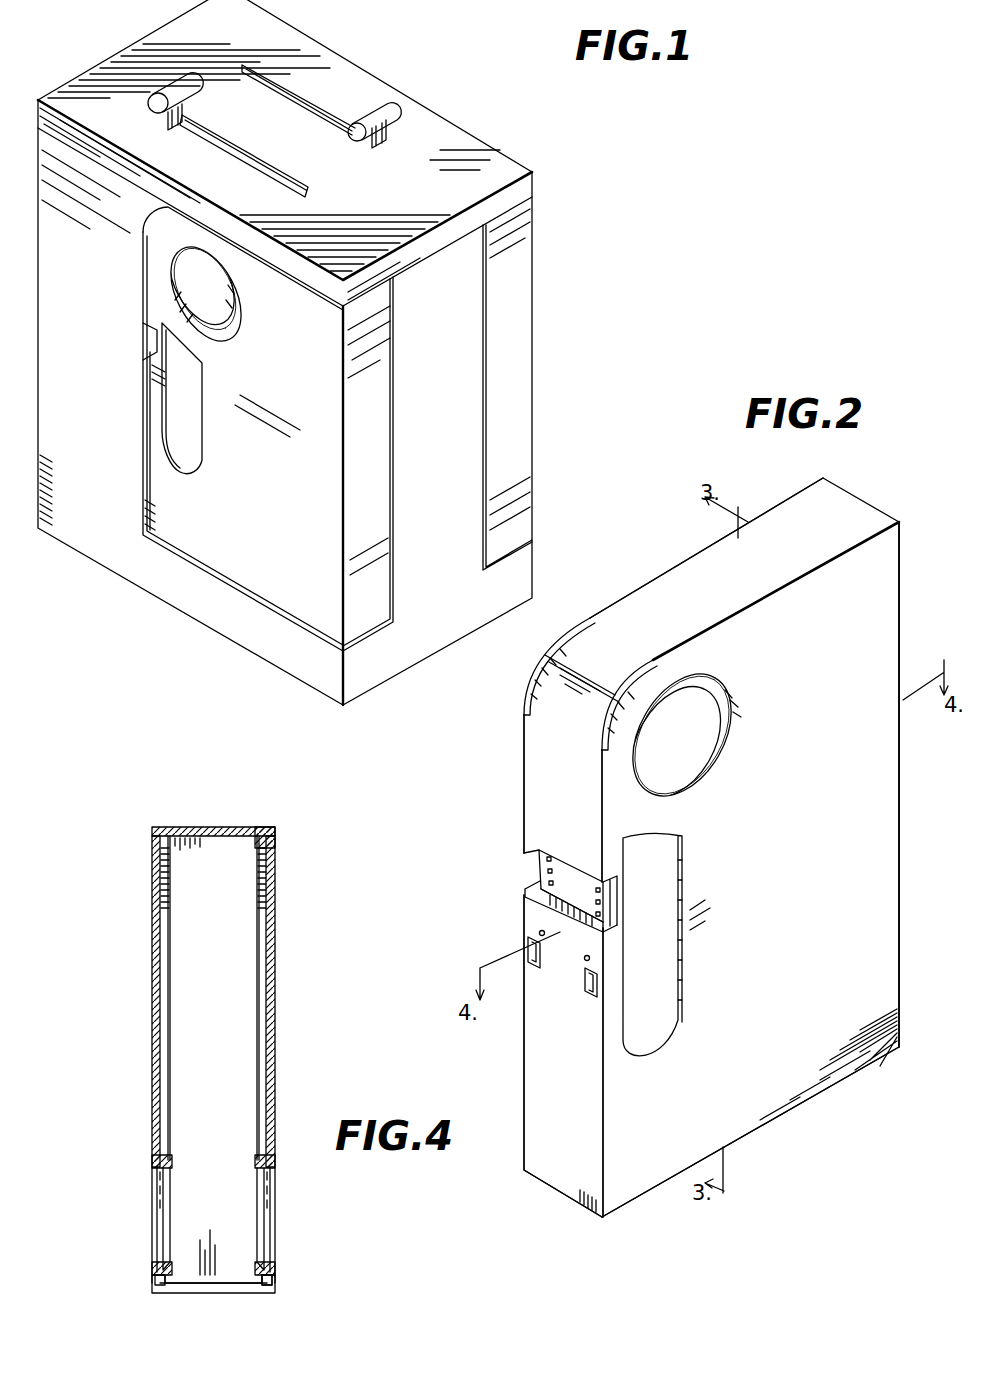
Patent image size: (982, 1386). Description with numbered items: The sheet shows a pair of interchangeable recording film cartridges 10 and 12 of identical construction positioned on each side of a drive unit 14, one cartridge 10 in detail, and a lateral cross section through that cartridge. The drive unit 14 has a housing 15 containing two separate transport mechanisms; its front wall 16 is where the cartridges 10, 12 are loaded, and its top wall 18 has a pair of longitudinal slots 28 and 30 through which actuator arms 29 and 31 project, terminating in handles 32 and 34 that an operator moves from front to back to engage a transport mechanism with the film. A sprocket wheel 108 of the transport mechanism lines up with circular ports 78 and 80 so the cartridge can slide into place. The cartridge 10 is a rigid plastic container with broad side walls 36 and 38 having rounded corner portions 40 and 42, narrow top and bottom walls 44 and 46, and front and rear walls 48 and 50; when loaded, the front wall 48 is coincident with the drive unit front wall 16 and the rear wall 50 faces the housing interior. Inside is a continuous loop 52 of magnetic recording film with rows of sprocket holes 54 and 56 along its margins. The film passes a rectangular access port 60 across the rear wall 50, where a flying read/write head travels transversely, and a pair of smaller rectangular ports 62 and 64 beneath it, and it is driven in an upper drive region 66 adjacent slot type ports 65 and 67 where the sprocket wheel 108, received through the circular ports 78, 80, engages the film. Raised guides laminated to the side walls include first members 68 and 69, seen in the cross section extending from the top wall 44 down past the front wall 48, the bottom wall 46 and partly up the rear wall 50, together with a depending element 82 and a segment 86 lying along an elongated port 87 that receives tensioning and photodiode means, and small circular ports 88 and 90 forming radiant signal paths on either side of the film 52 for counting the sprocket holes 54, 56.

In FIG. 1, the cartridge 10 is at (309, 390).
In FIG. 2, the cartridge 10 is at (804, 881).
In FIG. 4, the cartridge 10 is at (138, 926).
In FIG. 1, the cartridge 12 is at (520, 323).
In FIG. 1, the drive unit 14 is at (389, 203).
In FIG. 1, the housing 15 is at (480, 152).
In FIG. 1, the front wall 16 is at (398, 665).
In FIG. 1, the top wall 18 is at (324, 57).
In FIG. 1, the longitudinal slot 28 is at (265, 166).
In FIG. 1, the actuator arm 29 is at (184, 103).
In FIG. 1, the longitudinal slot 30 is at (310, 103).
In FIG. 1, the actuator arm 31 is at (388, 134).
In FIG. 1, the handle 32 is at (156, 108).
In FIG. 1, the handle 34 is at (360, 141).
In FIG. 2, the broad side wall 36 is at (661, 572).
In FIG. 4, the broad side wall 36 is at (152, 1034).
In FIG. 2, the broad side wall 38 is at (889, 618).
In FIG. 4, the broad side wall 38 is at (275, 1034).
In FIG. 2, the rounded corner portion 40 is at (540, 660).
In FIG. 2, the rounded corner portion 42 is at (650, 740).
In FIG. 2, the top wall 44 is at (848, 508).
In FIG. 2, the bottom wall 46 is at (810, 1100).
In FIG. 4, the bottom wall 46 is at (185, 830).
In FIG. 1, the front wall 48 is at (385, 392).
In FIG. 2, the front wall 48 is at (903, 880).
In FIG. 4, the front wall 48 is at (218, 830).
In FIG. 2, the rear wall 50 is at (534, 1050).
In FIG. 4, the rear wall 50 is at (228, 1293).
In FIG. 2, the continuous loop of magnetic recording film 52 is at (575, 880).
In FIG. 2, the row of sprocket holes 54 is at (542, 875).
In FIG. 2, the row of sprocket holes 56 is at (611, 902).
In FIG. 1, the access port 60 is at (148, 332).
In FIG. 2, the access port 60 is at (532, 846).
In FIG. 4, the access port 60 is at (191, 1306).
In FIG. 2, the rectangular port 62 is at (519, 952).
In FIG. 2, the rectangular port 64 is at (600, 996).
In FIG. 2, the slot type port 65 is at (578, 624).
In FIG. 2, the upper drive region 66 is at (602, 656).
In FIG. 2, the slot type port 67 is at (620, 690).
In FIG. 4, the first guide member 68 is at (258, 965).
In FIG. 4, the first guide member 69 is at (170, 965).
In FIG. 1, the circular port 78 is at (228, 316).
In FIG. 2, the circular port 78 is at (738, 733).
In FIG. 2, the circular port 80 is at (664, 735).
In FIG. 4, the depending element 82 is at (256, 1210).
In FIG. 4, the segment 86 is at (166, 1210).
In FIG. 1, the elongated port 87 is at (190, 447).
In FIG. 2, the elongated port 87 is at (685, 928).
In FIG. 4, the elongated port 87 is at (276, 1208).
In FIG. 2, the small circular port 88 is at (540, 914).
In FIG. 4, the small circular port 88 is at (152, 1205).
In FIG. 2, the small circular port 90 is at (590, 960).
In FIG. 4, the small circular port 90 is at (276, 1286).
In FIG. 1, the sprocket wheel 108 is at (186, 268).